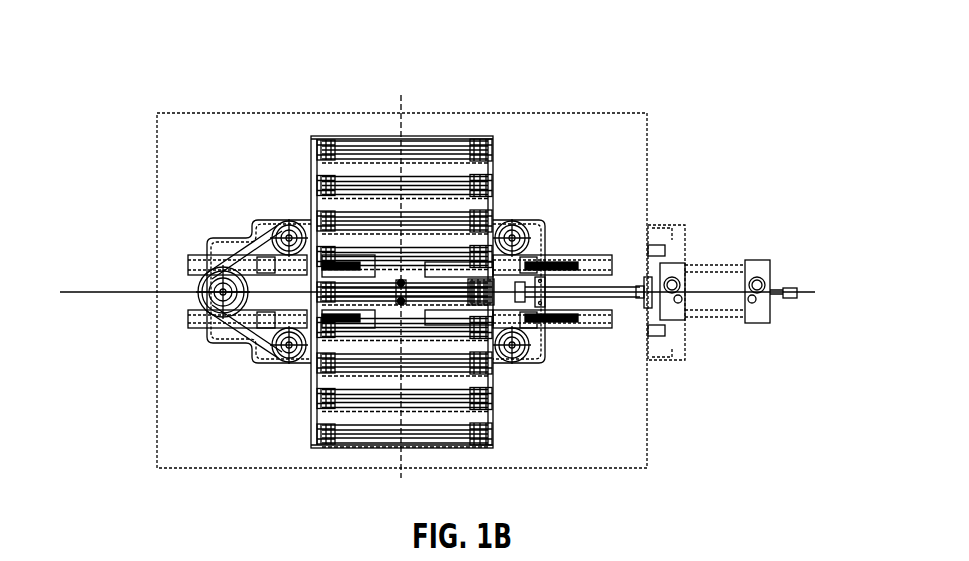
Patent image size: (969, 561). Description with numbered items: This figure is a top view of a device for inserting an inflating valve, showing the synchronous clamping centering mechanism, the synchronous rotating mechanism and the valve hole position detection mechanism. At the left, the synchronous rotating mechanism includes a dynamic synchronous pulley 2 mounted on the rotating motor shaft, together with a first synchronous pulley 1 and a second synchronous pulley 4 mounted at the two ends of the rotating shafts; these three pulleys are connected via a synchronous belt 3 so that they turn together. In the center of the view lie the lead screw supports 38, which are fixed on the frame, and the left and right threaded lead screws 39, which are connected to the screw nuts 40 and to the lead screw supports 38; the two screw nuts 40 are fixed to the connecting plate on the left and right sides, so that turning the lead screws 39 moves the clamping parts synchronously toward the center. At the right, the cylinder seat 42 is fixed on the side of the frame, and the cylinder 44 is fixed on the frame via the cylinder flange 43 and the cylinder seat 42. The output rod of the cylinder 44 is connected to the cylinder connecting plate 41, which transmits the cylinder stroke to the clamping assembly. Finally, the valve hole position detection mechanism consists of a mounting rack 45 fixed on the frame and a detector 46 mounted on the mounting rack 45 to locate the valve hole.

The first synchronous pulley 1 is at (270, 355).
The dynamic synchronous pulley 2 is at (207, 302).
The synchronous belt 3 is at (212, 265).
The second synchronous pulley 4 is at (250, 239).
The lead screw supports 38 is at (405, 288).
The left and right threaded lead screws 39 is at (422, 290).
The screw nuts 40 is at (495, 287).
The cylinder connecting plate 41 is at (545, 280).
The cylinder seat 42 is at (670, 240).
The cylinder flange 43 is at (660, 263).
The cylinder 44 is at (767, 273).
The mounting rack 45 is at (798, 297).
The detector 46 is at (787, 298).